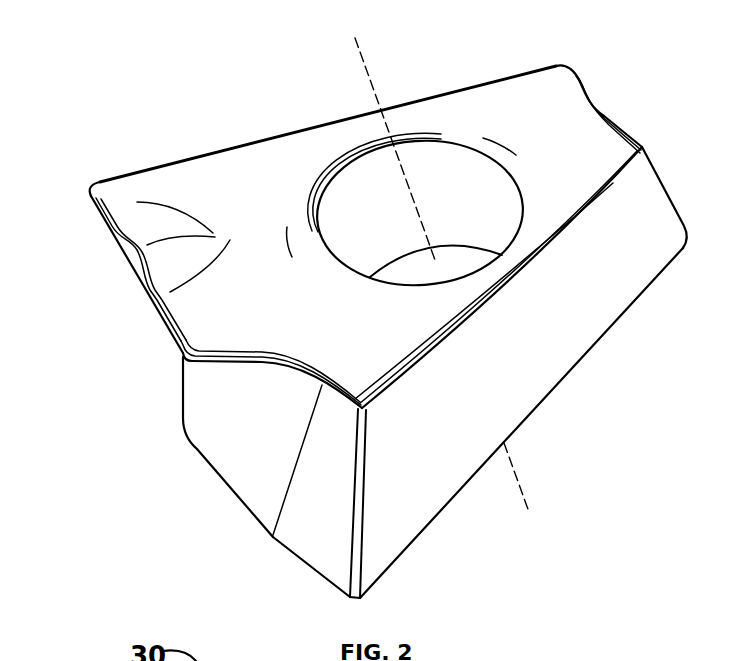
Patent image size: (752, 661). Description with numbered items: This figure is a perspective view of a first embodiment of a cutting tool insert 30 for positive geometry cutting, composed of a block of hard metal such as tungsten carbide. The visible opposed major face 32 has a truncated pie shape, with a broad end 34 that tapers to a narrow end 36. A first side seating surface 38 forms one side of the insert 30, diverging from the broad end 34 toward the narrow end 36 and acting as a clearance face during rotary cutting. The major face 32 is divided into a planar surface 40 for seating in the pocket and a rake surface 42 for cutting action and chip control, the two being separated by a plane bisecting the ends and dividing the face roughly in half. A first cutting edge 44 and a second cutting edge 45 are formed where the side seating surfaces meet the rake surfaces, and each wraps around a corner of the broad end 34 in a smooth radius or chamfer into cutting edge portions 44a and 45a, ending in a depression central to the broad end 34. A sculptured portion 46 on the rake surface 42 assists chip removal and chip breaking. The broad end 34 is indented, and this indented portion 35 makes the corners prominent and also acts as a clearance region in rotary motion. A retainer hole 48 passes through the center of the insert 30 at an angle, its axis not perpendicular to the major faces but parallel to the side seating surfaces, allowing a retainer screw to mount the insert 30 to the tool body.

The cutting tool insert 30 is at (153, 46).
The opposed major face 32 is at (320, 287).
The broad end 34 is at (162, 386).
The indented portion 35 is at (230, 462).
The narrow end 36 is at (638, 115).
The first side seating surface 38 is at (530, 394).
The planar surface 40 is at (552, 215).
The rake surface 42 is at (518, 93).
The first cutting edge 44 is at (436, 517).
The cutting edge portion 44a is at (305, 568).
The second cutting edge 45 is at (202, 152).
The cutting edge portion 45a is at (102, 224).
The sculptured portion 46 is at (125, 215).
The retainer hole 48 is at (414, 273).